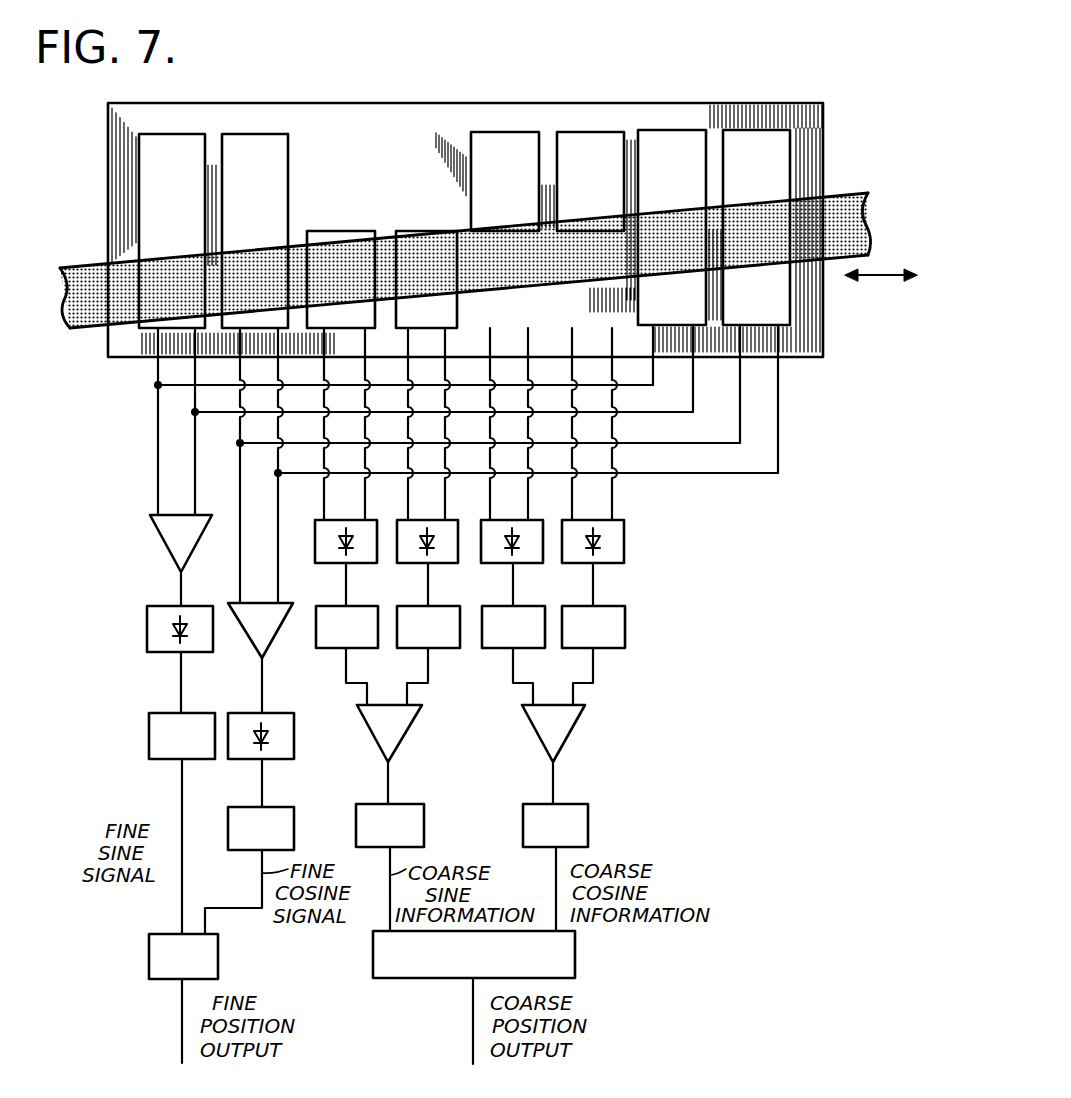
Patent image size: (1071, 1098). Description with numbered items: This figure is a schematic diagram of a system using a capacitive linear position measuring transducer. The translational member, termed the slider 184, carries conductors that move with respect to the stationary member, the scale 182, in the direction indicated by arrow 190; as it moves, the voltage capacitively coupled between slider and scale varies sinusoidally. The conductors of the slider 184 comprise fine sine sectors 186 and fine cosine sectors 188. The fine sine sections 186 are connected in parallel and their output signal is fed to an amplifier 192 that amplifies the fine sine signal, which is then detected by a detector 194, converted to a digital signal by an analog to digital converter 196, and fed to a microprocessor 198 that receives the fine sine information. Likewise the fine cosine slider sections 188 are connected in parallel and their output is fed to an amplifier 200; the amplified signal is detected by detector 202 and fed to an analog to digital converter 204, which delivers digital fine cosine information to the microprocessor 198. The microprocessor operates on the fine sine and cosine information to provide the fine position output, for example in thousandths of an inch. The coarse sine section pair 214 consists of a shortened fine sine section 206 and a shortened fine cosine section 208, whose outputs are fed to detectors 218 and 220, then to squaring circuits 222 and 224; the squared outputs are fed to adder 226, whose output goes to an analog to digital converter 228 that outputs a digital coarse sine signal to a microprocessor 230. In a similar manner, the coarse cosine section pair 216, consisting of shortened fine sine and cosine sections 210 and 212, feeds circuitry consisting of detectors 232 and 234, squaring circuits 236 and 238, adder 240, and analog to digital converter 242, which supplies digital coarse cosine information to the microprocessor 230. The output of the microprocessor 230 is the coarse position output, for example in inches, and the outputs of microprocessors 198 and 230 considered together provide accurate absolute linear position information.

The scale 182 is at (88, 272).
The slider 184 is at (363, 98).
The fine sine sectors 186 is at (157, 145).
The fine cosine sectors 188 is at (245, 145).
The arrow 190 is at (866, 278).
The amplifier 192 is at (150, 537).
The detector 194 is at (148, 621).
The analog to digital converter 196 is at (160, 713).
The microprocessor 198 is at (149, 950).
The amplifier 200 is at (238, 603).
The detector 202 is at (253, 694).
The analog to digital converter 204 is at (248, 807).
The shortened fine sine section 206 is at (366, 230).
The shortened fine cosine section 208 is at (442, 230).
The shortened fine sine section 210 is at (508, 140).
The shortened fine cosine section 212 is at (600, 140).
The coarse sine section pair 214 is at (382, 244).
The coarse cosine section pair 216 is at (542, 143).
The detector 218 is at (316, 527).
The detector 220 is at (398, 527).
The squaring circuit 222 is at (337, 606).
The squaring circuit 224 is at (415, 606).
The adder 226 is at (408, 729).
The analog to digital converter 228 is at (372, 804).
The microprocessor 230 is at (373, 950).
The detector 232 is at (482, 530).
The detector 234 is at (624, 530).
The squaring circuit 236 is at (500, 606).
The squaring circuit 238 is at (606, 606).
The adder 240 is at (575, 729).
The analog to digital converter 242 is at (537, 804).